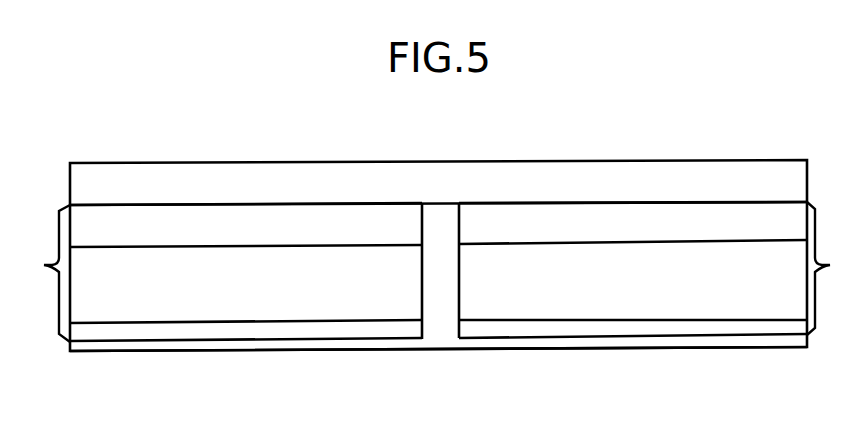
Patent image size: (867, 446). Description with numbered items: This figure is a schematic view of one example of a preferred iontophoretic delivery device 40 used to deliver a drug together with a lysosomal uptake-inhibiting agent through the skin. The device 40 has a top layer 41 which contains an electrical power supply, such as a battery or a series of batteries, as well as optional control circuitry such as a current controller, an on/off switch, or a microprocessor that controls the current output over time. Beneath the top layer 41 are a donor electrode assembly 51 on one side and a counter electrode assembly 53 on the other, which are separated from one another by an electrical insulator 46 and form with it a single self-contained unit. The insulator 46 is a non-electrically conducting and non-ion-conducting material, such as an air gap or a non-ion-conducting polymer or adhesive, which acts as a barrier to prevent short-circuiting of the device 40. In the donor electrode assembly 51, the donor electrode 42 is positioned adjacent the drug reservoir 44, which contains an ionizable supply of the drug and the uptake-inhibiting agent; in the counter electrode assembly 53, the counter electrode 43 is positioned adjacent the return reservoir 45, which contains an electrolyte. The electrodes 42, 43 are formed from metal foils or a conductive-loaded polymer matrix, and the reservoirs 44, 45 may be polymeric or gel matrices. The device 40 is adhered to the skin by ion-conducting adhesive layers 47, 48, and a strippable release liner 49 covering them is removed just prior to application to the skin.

The iontophoretic delivery device 40 is at (571, 154).
The top layer 41 is at (658, 178).
The donor electrode 42 is at (170, 215).
The counter electrode 43 is at (697, 215).
The drug reservoir 44 is at (138, 305).
The return reservoir 45 is at (748, 300).
The electrical insulator 46 is at (428, 215).
The ion-conducting adhesive layer 47 is at (211, 328).
The ion-conducting adhesive layer 48 is at (680, 323).
The strippable release liner 49 is at (300, 343).
The donor electrode assembly 51 is at (54, 273).
The counter electrode assembly 53 is at (825, 268).